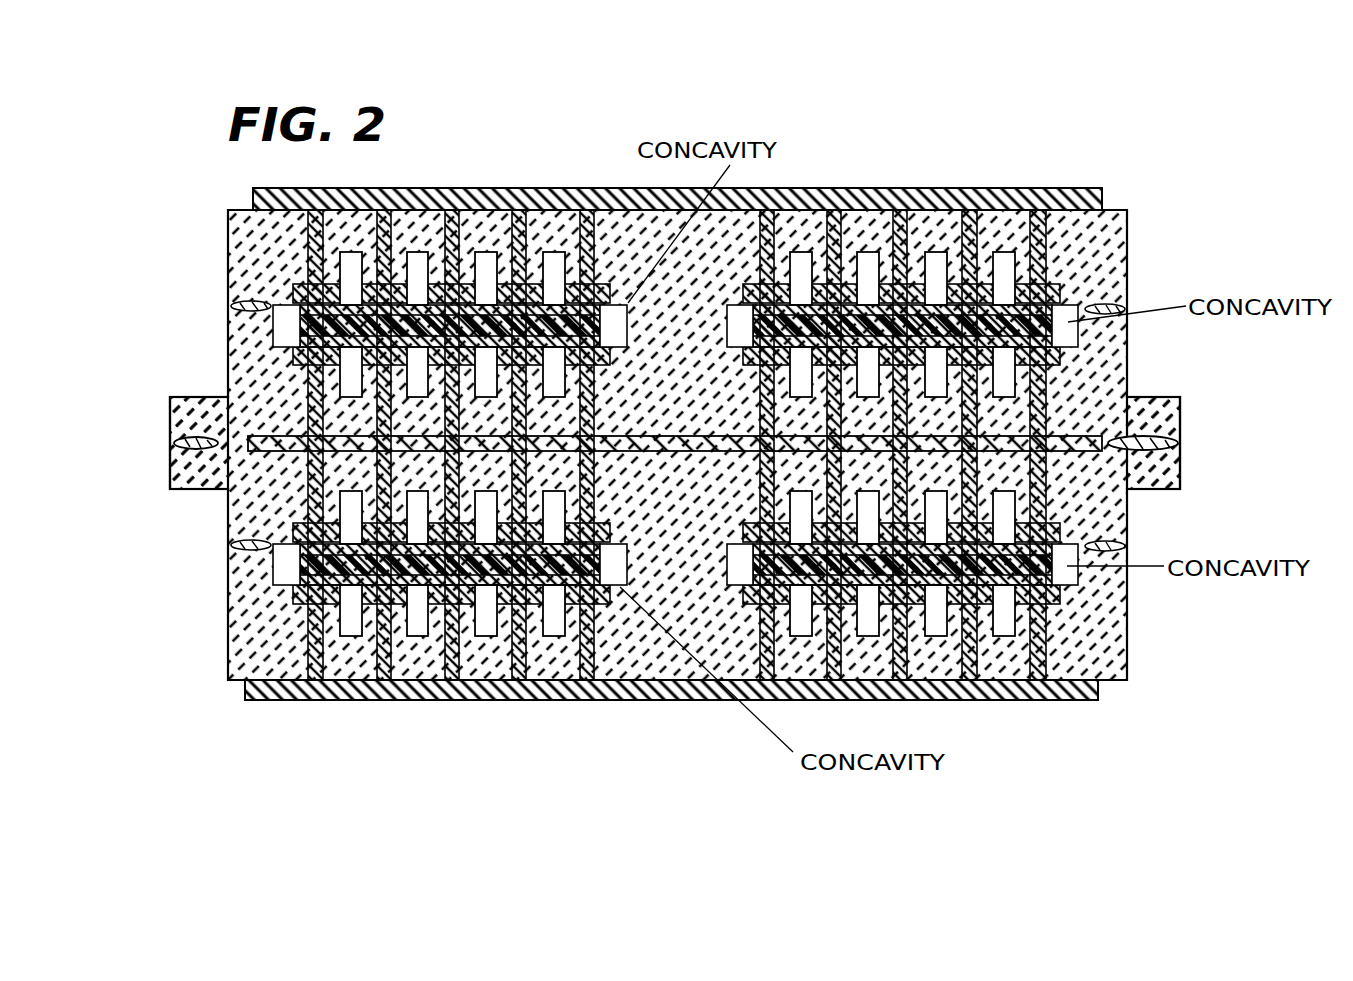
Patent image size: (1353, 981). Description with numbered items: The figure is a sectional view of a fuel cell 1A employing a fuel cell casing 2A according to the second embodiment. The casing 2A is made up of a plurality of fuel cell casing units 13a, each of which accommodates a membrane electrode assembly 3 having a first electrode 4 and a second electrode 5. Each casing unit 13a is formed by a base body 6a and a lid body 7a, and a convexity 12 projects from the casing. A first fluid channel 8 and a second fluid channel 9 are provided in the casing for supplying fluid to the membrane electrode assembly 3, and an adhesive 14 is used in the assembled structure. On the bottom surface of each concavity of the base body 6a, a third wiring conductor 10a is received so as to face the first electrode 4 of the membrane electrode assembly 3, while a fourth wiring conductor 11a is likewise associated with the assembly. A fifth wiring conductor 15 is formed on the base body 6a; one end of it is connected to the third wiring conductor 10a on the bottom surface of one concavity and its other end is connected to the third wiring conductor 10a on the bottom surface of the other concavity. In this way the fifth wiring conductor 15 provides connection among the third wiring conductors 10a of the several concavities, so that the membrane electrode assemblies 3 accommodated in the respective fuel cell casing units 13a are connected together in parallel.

The fuel cell 1A is at (1150, 205).
The fuel cell casing 2A is at (88, 277).
The membrane electrode assembly 3 is at (1095, 345).
The first electrode 4 is at (910, 381).
The second electrode 5 is at (902, 278).
The base body 6a is at (243, 326).
The lid body 7a is at (256, 255).
The first fluid channel 8 is at (787, 383).
The second fluid channel 9 is at (802, 215).
The third wiring conductor 10a is at (607, 351).
The fourth wiring conductor 11a is at (600, 278).
The convexity 12 is at (198, 404).
The fuel cell casing unit 13a is at (160, 216).
The adhesive 14 is at (1160, 450).
The fifth wiring conductor 15 is at (660, 447).